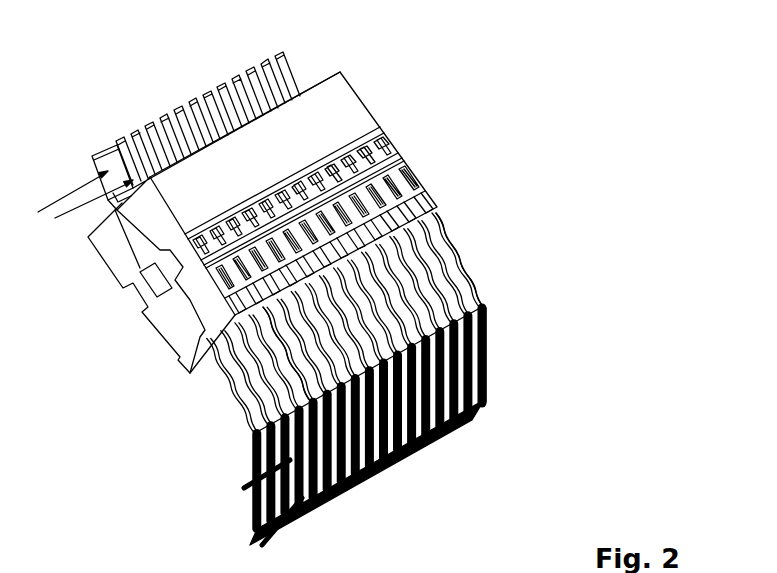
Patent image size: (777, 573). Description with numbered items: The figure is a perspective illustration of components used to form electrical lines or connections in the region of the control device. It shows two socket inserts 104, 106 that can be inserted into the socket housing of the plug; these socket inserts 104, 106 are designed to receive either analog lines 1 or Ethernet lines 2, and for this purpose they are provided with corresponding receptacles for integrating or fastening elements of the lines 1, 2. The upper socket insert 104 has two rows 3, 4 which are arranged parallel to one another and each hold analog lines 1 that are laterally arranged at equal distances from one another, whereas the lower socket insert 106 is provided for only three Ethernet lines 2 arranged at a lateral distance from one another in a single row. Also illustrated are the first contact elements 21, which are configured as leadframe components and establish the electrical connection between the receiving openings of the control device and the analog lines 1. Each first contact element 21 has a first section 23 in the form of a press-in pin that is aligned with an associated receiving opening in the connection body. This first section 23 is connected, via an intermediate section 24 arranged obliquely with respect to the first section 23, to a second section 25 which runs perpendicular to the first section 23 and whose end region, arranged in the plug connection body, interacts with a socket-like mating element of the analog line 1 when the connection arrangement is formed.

The analog lines 1 is at (244, 76).
The Ethernet lines 2 is at (102, 150).
The row 3 is at (58, 217).
The row 4 is at (43, 204).
The socket insert 104 is at (345, 103).
The socket insert 106 is at (120, 254).
The first contact elements 21 is at (440, 266).
The first section 23 is at (437, 447).
The intermediate section 24 is at (486, 368).
The second section 25 is at (463, 293).